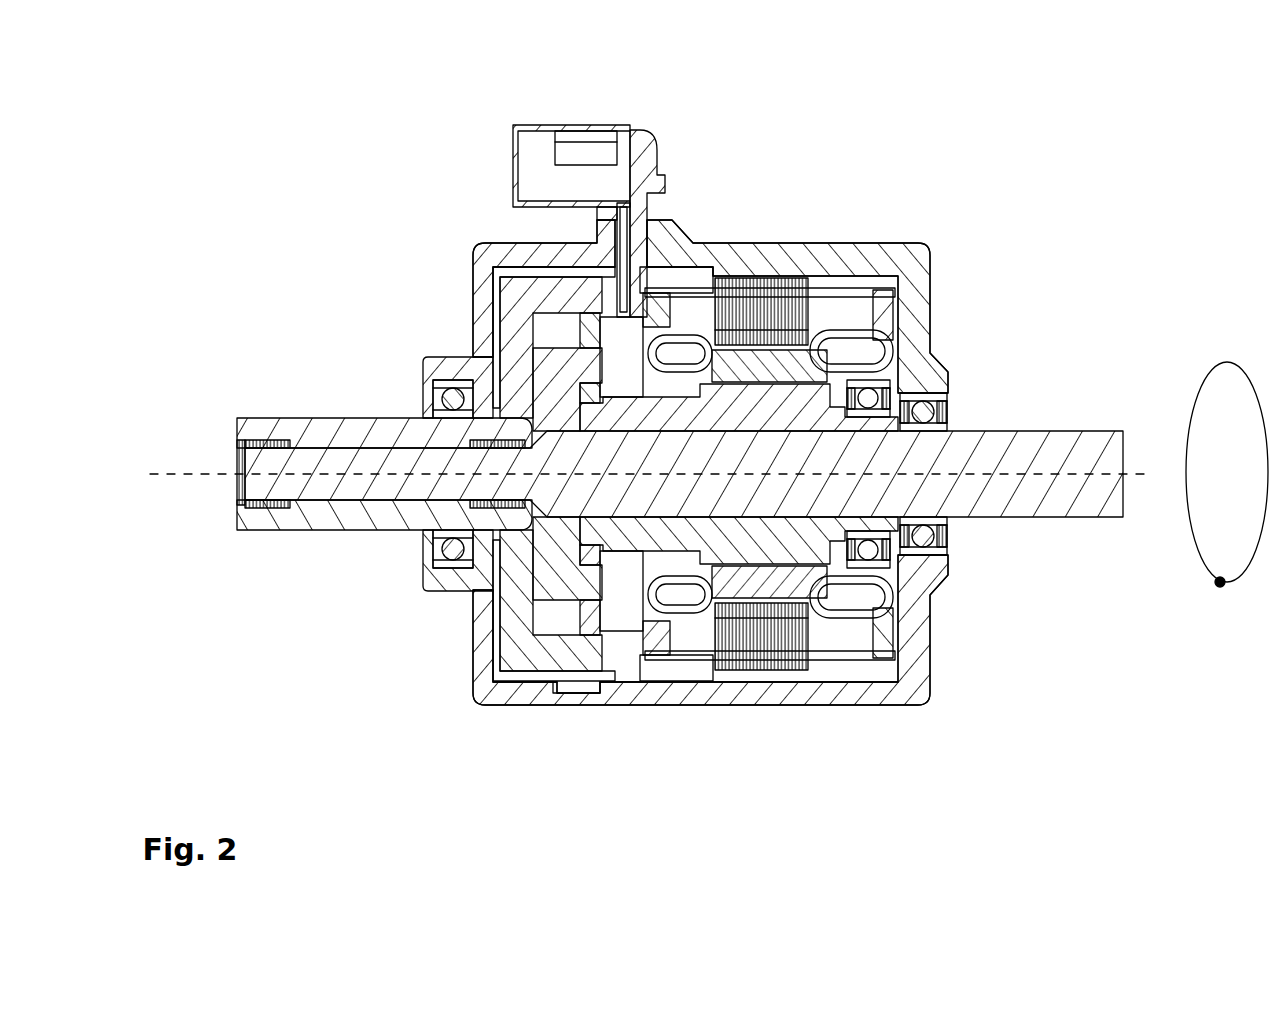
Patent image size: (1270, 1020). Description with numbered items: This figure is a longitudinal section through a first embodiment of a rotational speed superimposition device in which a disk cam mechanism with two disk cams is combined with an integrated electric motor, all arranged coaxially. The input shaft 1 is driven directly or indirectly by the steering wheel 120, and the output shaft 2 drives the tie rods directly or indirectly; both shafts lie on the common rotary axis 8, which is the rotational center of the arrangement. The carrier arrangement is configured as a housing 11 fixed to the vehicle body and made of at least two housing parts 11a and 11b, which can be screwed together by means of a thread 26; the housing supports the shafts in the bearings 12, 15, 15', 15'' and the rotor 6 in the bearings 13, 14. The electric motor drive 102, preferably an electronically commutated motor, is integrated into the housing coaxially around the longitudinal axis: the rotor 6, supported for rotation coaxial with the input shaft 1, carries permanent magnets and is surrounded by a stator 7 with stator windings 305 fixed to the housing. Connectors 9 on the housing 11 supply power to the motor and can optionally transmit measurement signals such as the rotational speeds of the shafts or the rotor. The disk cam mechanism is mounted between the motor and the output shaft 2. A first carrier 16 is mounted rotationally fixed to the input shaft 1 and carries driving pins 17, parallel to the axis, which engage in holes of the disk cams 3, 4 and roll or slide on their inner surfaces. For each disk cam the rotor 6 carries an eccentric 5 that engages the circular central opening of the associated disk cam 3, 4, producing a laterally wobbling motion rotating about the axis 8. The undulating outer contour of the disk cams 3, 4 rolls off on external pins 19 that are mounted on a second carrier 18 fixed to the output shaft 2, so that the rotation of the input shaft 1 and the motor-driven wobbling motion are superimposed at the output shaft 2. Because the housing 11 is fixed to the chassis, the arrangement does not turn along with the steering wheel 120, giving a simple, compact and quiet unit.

The input shaft 1 is at (1025, 495).
The output shaft 2 is at (305, 433).
The disk cam 3 is at (640, 253).
The disk cam 4 is at (618, 312).
The eccentric 5 is at (620, 530).
The rotor 6 is at (836, 377).
The stator 7 is at (783, 297).
The rotary axis 8 is at (185, 470).
The connectors 9 is at (578, 148).
The housing 11 is at (688, 792).
The housing part 11a is at (633, 698).
The housing part 11b is at (522, 695).
The bearing 12 is at (470, 570).
The bearing 13 is at (705, 600).
The bearing 14 is at (920, 435).
The bearing 15 is at (922, 528).
The bearing 15' is at (457, 597).
The bearing 15'' is at (244, 556).
The first carrier 16 is at (543, 408).
The driving pins 17 is at (592, 314).
The second carrier 18 is at (580, 363).
The external pins 19 is at (558, 278).
The thread 26 is at (570, 695).
The electric motor drive 102 is at (797, 145).
The steering wheel 120 is at (1220, 582).
The stator windings 305 is at (897, 312).